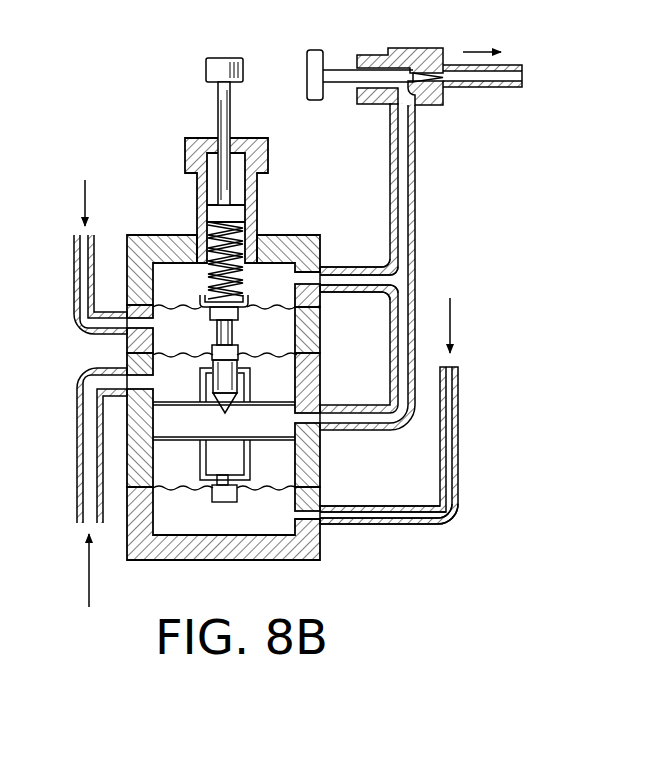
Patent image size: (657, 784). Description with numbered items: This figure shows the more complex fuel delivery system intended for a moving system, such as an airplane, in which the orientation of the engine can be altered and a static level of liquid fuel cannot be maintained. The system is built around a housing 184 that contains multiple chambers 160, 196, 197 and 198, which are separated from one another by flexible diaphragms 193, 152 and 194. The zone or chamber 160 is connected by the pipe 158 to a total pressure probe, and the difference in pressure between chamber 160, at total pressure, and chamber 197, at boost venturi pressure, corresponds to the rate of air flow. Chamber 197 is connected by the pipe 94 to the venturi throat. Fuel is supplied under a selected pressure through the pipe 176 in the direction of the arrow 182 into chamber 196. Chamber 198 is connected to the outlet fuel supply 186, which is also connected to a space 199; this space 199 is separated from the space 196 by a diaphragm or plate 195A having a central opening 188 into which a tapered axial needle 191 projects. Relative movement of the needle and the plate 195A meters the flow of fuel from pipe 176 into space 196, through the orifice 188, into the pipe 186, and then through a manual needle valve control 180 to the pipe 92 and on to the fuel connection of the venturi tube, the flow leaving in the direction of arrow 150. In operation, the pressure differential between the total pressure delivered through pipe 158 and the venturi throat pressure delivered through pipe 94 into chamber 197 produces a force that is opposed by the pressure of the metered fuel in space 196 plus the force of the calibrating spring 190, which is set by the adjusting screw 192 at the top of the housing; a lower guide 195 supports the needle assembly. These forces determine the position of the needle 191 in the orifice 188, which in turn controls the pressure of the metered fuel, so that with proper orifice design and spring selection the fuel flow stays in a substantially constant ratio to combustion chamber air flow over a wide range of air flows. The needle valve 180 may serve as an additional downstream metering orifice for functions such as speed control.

The pipe 92 is at (480, 88).
The pipe 94 is at (75, 290).
The fuel outlet flow 150 is at (474, 46).
The flexible diaphragm 152 is at (91, 199).
The pipe 158 is at (375, 525).
The chamber 160 is at (452, 313).
The pipe 176 is at (78, 445).
The manual needle valve control 180 is at (375, 68).
The arrow 182 is at (88, 573).
The housing 184 is at (312, 225).
The outlet fuel supply 186 is at (415, 218).
The central opening 188 is at (235, 405).
The calibrating spring 190 is at (248, 242).
The needle 191 is at (241, 327).
The adjusting screw 192 is at (218, 110).
The flexible diaphragm 193 is at (297, 488).
The flexible diaphragm 194 is at (296, 307).
The lower guide bracket 195 is at (251, 442).
The diaphragm or plate 195A is at (233, 402).
The chamber 196 is at (193, 387).
The chamber 197 is at (193, 345).
The chamber 198 is at (193, 294).
The space 199 is at (224, 426).